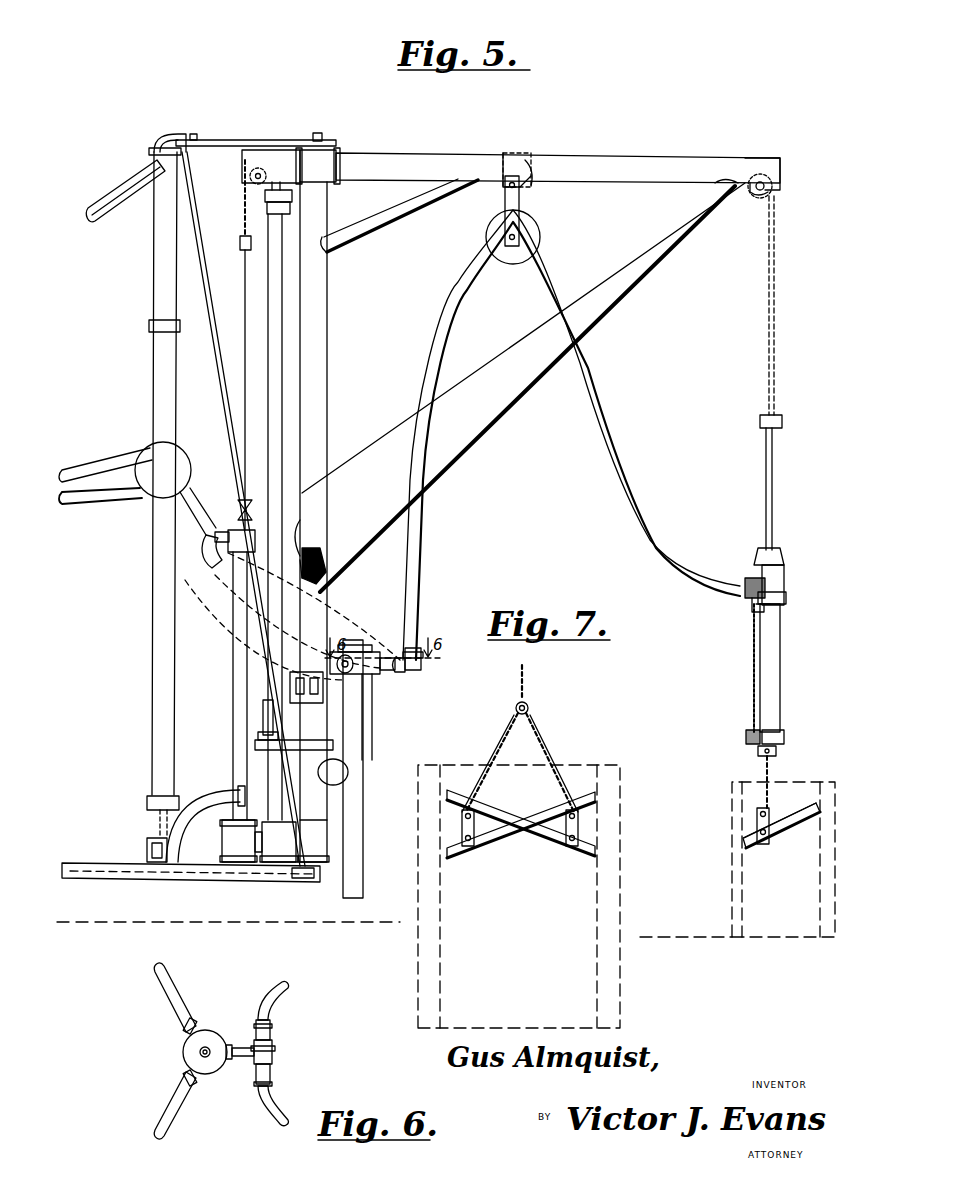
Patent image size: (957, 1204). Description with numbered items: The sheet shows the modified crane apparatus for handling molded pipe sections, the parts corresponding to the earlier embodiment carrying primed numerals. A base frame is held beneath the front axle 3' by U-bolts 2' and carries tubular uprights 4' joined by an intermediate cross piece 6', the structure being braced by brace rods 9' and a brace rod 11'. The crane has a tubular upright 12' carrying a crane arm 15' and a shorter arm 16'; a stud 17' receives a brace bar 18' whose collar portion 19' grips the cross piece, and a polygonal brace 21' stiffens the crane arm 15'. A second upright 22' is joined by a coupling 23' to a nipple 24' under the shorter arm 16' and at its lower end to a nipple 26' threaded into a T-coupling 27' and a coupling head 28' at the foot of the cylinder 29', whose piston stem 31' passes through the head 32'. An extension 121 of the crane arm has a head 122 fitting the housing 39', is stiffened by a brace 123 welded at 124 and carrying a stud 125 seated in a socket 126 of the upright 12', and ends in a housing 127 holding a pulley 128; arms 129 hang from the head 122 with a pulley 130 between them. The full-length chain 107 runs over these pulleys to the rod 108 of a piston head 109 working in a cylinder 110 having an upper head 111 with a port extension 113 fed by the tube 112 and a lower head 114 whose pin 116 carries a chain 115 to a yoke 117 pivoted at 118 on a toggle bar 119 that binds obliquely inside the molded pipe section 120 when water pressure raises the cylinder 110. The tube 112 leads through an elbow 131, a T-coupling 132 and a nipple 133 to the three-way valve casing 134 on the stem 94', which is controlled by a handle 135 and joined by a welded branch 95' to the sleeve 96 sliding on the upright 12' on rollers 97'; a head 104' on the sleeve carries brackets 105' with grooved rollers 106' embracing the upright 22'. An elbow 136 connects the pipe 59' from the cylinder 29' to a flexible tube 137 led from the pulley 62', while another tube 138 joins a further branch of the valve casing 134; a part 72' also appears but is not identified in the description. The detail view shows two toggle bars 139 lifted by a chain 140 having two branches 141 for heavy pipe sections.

In FIG. 5, the U-bolt 2' is at (191, 861).
In FIG. 5, the front axle 3' is at (157, 851).
In FIG. 5, the tubular upright 4' is at (170, 471).
In FIG. 5, the intermediate cross piece 6' is at (153, 327).
In FIG. 5, the brace rod 9' is at (243, 509).
In FIG. 5, the brace rod 11' is at (125, 202).
In FIG. 5, the tubular upright 12' is at (339, 501).
In FIG. 5, the crane arm 15' is at (558, 150).
In FIG. 5, the shorter arm 16' is at (281, 137).
In FIG. 5, the stud 17' is at (335, 126).
In FIG. 5, the brace bar 18' is at (256, 126).
In FIG. 5, the collar portion 19' is at (182, 129).
In FIG. 5, the polygonal brace 21' is at (399, 215).
In FIG. 5, the upright 22' is at (318, 501).
In FIG. 5, the coupling 23' is at (316, 202).
In FIG. 5, the nipple 24' is at (338, 155).
In FIG. 5, the nipple 26' is at (276, 867).
In FIG. 5, the T-coupling 27' is at (352, 841).
In FIG. 5, the coupling head 28' is at (234, 866).
In FIG. 5, the cylinder 29' is at (214, 686).
In FIG. 5, the piston stem 31' is at (232, 230).
In FIG. 5, the head 32' is at (293, 401).
In FIG. 5, the housing 39' is at (520, 140).
In FIG. 5, the pipe 59' is at (176, 550).
In FIG. 6, the pipe 59' is at (290, 1000).
In FIG. 5, the pulley 62' is at (167, 475).
In FIG. 5, the elbow pipe 72' is at (205, 816).
In FIG. 5, the stem 94' is at (374, 769).
In FIG. 5, the welded branch 95' is at (363, 769).
In FIG. 5, the sleeve 96 is at (374, 729).
In FIG. 5, the roller 97' is at (306, 700).
In FIG. 5, the head 104' is at (294, 761).
In FIG. 5, the bracket 105' is at (227, 751).
In FIG. 5, the grooved roller 106' is at (232, 719).
In FIG. 5, the chain 107 is at (767, 262).
In FIG. 5, the piston rod 108 is at (774, 470).
In FIG. 5, the piston head 109 is at (756, 612).
In FIG. 5, the cylinder 110 is at (780, 644).
In FIG. 5, the head 111 is at (786, 580).
In FIG. 5, the tube 112 is at (620, 487).
In FIG. 6, the tube 112 is at (290, 1118).
In FIG. 5, the port extension 113 is at (750, 576).
In FIG. 5, the head 114 is at (782, 732).
In FIG. 5, the chain 115 is at (771, 770).
In FIG. 5, the pin 116 is at (756, 750).
In FIG. 5, the yoke 117 is at (772, 826).
In FIG. 5, the pivotal connection 118 is at (763, 845).
In FIG. 5, the toggle bar 119 is at (790, 812).
In FIG. 5, the molded pipe section 120 is at (734, 905).
In FIG. 5, the crane arm extension 121 is at (632, 160).
In FIG. 5, the head 122 is at (530, 160).
In FIG. 5, the brace 123 is at (642, 277).
In FIG. 5, the weld 124 is at (735, 180).
In FIG. 5, the stud 125 is at (338, 570).
In FIG. 5, the socket 126 is at (322, 526).
In FIG. 5, the housing 127 is at (775, 162).
In FIG. 5, the pulley 128 is at (757, 197).
In FIG. 5, the arm 129 is at (520, 206).
In FIG. 5, the pulley 130 is at (514, 262).
In FIG. 5, the elbow 131 is at (424, 664).
In FIG. 6, the elbow 131 is at (272, 1086).
In FIG. 5, the T-coupling 132 is at (418, 648).
In FIG. 6, the T-coupling 132 is at (274, 1052).
In FIG. 6, the nipple 133 is at (242, 1058).
In FIG. 5, the three-way valve casing 134 is at (372, 672).
In FIG. 6, the three-way valve casing 134 is at (212, 1032).
In FIG. 5, the handle 135 is at (410, 644).
In FIG. 6, the handle 135 is at (200, 1054).
In FIG. 6, the elbow 136 is at (272, 1026).
In FIG. 5, the flexible tube 137 is at (86, 474).
In FIG. 6, the flexible tube 137 is at (172, 988).
In FIG. 5, the tube 138 is at (92, 500).
In FIG. 6, the tube 138 is at (172, 1112).
In FIG. 7, the toggle bar 139 is at (552, 832).
In FIG. 7, the chain 140 is at (530, 706).
In FIG. 7, the branch 141 is at (548, 748).